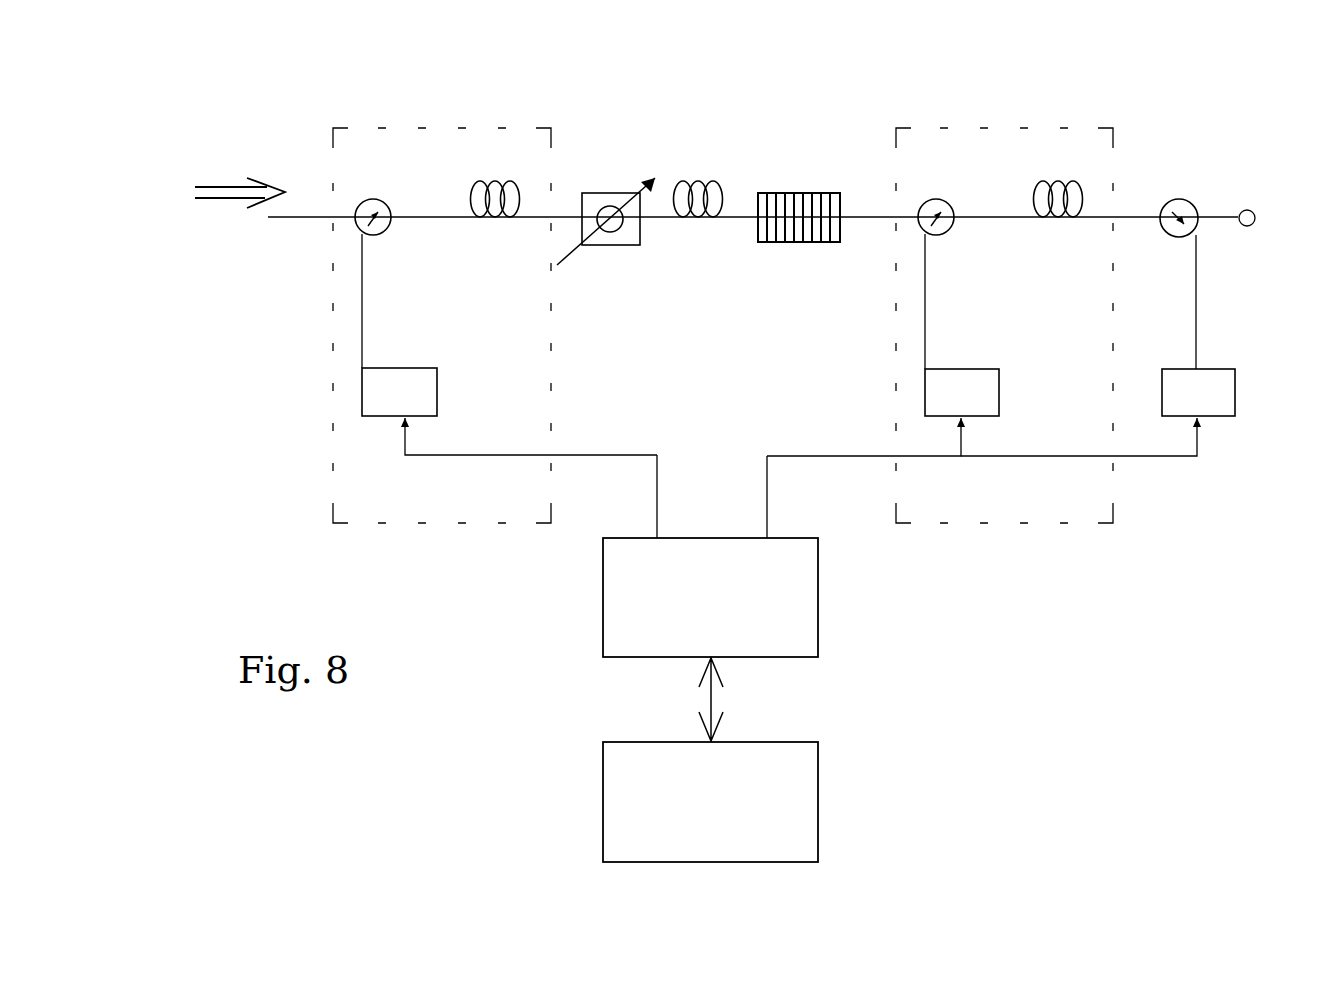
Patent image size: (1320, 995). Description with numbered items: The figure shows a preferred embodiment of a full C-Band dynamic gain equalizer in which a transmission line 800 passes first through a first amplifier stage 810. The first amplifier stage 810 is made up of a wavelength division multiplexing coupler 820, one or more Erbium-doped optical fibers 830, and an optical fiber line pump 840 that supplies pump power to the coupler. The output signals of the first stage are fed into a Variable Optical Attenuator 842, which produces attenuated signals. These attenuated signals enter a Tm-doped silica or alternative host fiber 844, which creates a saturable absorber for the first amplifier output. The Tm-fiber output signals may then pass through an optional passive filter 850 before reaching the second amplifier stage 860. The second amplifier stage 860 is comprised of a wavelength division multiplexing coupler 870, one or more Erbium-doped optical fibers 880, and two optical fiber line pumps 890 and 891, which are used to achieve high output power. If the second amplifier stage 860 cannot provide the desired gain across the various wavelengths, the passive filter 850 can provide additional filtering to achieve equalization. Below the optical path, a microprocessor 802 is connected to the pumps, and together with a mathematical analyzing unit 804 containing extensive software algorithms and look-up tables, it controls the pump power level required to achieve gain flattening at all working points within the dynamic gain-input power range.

The transmission line 800 is at (316, 219).
The microprocessor 802 is at (812, 636).
The mathematical analyzing unit 804 is at (783, 862).
The first amplifier stage 810 is at (540, 126).
The wavelength division multiplexing coupler 820 is at (377, 203).
The Erbium-doped optical fibers 830 is at (485, 178).
The optical fiber line pump 840 is at (431, 411).
The Variable Optical Attenuator 842 is at (595, 203).
The Tm-doped silica or alternative host fiber 844 is at (715, 178).
The passive filter 850 is at (797, 192).
The second amplifier stage 860 is at (1093, 124).
The wavelength division multiplexing coupler 870 is at (933, 198).
The Erbium-doped optical fibers 880 is at (1047, 178).
The optical fiber line pump 890 is at (945, 368).
The optical fiber line pump 891 is at (1212, 368).